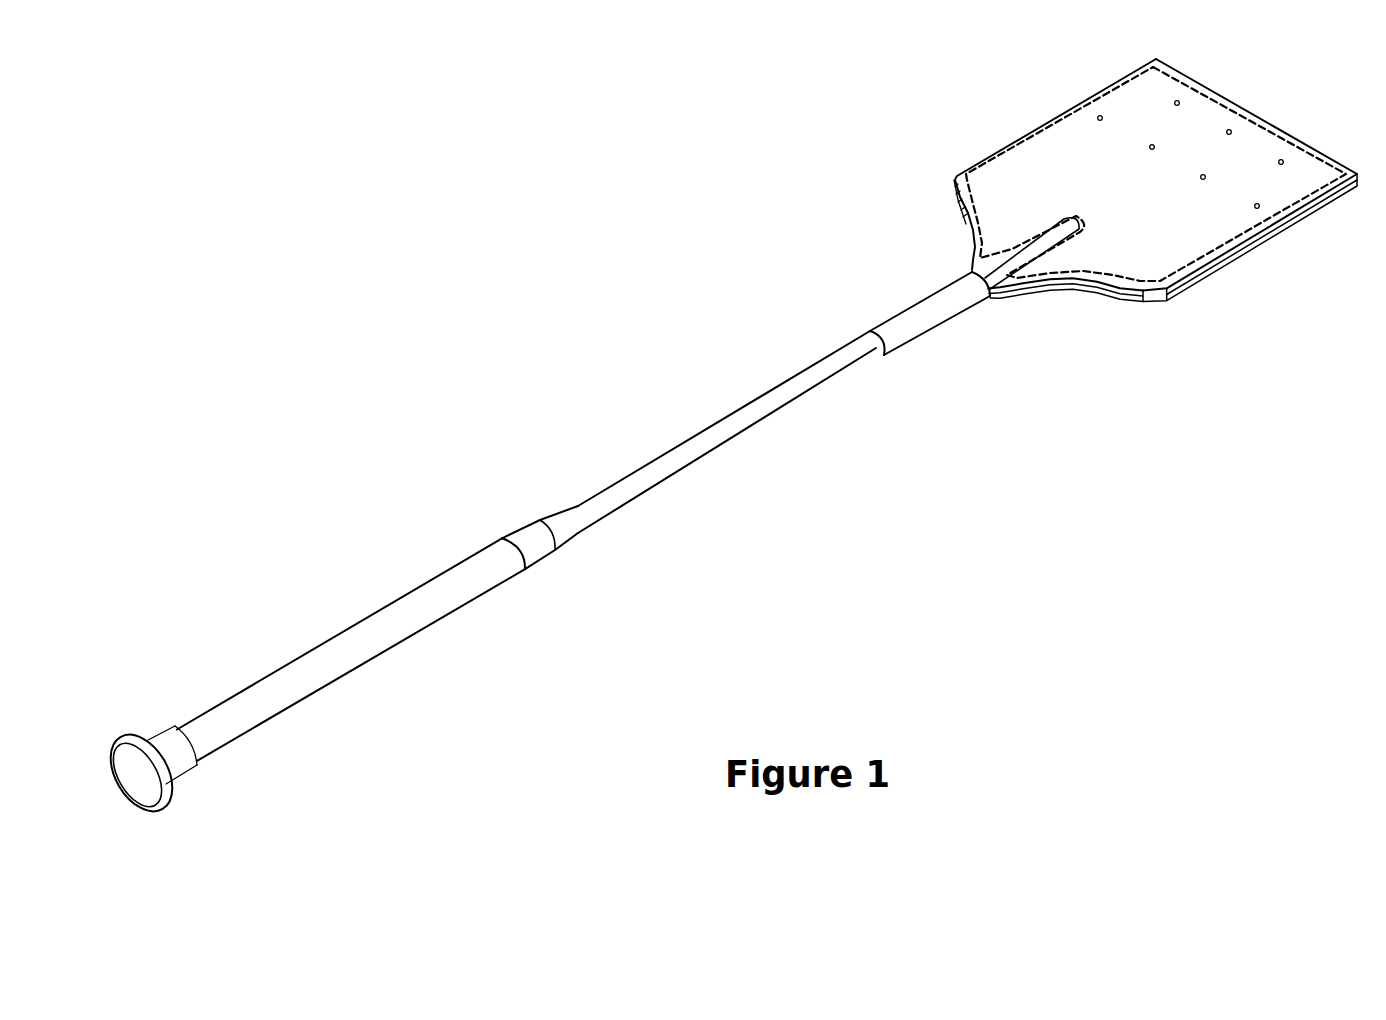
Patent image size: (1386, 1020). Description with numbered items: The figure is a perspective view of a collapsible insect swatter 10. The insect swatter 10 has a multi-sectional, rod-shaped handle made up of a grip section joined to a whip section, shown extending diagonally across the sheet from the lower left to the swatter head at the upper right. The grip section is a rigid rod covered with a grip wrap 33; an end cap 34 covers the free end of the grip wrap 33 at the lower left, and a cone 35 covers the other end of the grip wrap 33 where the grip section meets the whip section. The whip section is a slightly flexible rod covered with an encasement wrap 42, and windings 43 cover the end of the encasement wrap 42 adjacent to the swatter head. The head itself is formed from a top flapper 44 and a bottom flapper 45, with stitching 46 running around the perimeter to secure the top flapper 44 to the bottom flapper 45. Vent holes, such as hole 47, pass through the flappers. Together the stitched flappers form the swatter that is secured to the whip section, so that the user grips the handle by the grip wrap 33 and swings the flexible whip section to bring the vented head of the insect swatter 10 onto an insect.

The insect swatter 10 is at (565, 294).
The grip wrap 33 is at (305, 645).
The end cap 34 is at (144, 725).
The cone 35 is at (534, 508).
The encasement wrap 42 is at (693, 424).
The windings 43 is at (879, 314).
The top flapper 44 is at (958, 160).
The bottom flapper 45 is at (1097, 307).
The stitching 46 is at (1020, 133).
The hole 47 is at (1134, 156).